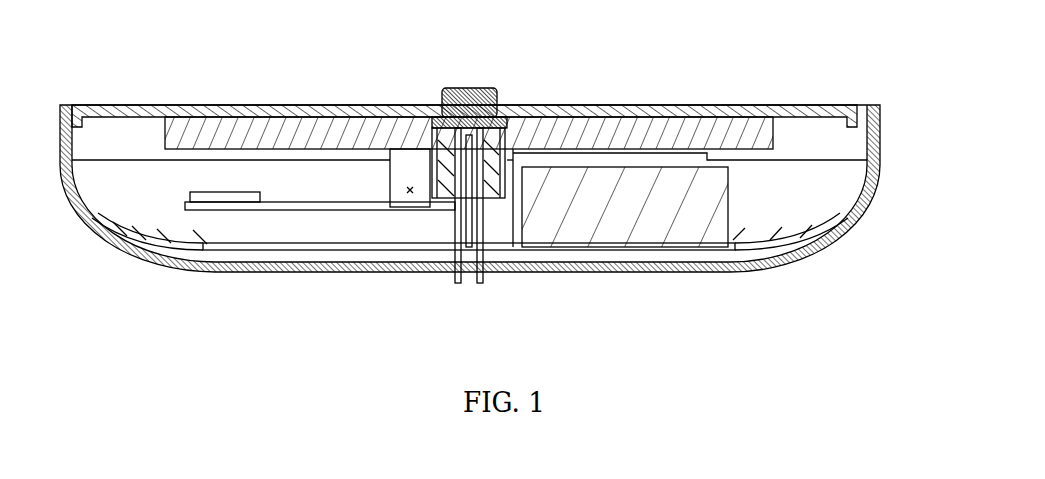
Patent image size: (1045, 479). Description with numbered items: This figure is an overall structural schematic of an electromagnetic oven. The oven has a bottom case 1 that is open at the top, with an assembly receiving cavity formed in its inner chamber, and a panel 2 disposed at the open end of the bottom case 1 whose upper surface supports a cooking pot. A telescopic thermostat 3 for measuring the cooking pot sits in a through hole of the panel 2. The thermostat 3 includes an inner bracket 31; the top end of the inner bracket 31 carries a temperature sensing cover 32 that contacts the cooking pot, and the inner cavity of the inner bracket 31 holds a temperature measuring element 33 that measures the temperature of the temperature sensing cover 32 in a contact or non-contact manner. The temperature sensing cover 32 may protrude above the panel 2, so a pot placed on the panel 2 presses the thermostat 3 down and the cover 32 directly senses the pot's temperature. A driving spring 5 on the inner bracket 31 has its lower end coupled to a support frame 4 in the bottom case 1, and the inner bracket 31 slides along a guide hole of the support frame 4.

The bottom case 1 is at (855, 210).
The panel 2 is at (312, 108).
The thermostat 3 is at (467, 105).
The inner bracket 31 is at (437, 116).
The temperature sensing cover 32 is at (465, 89).
The temperature measuring element 33 is at (483, 89).
The support frame 4 is at (483, 180).
The driving spring 5 is at (445, 170).